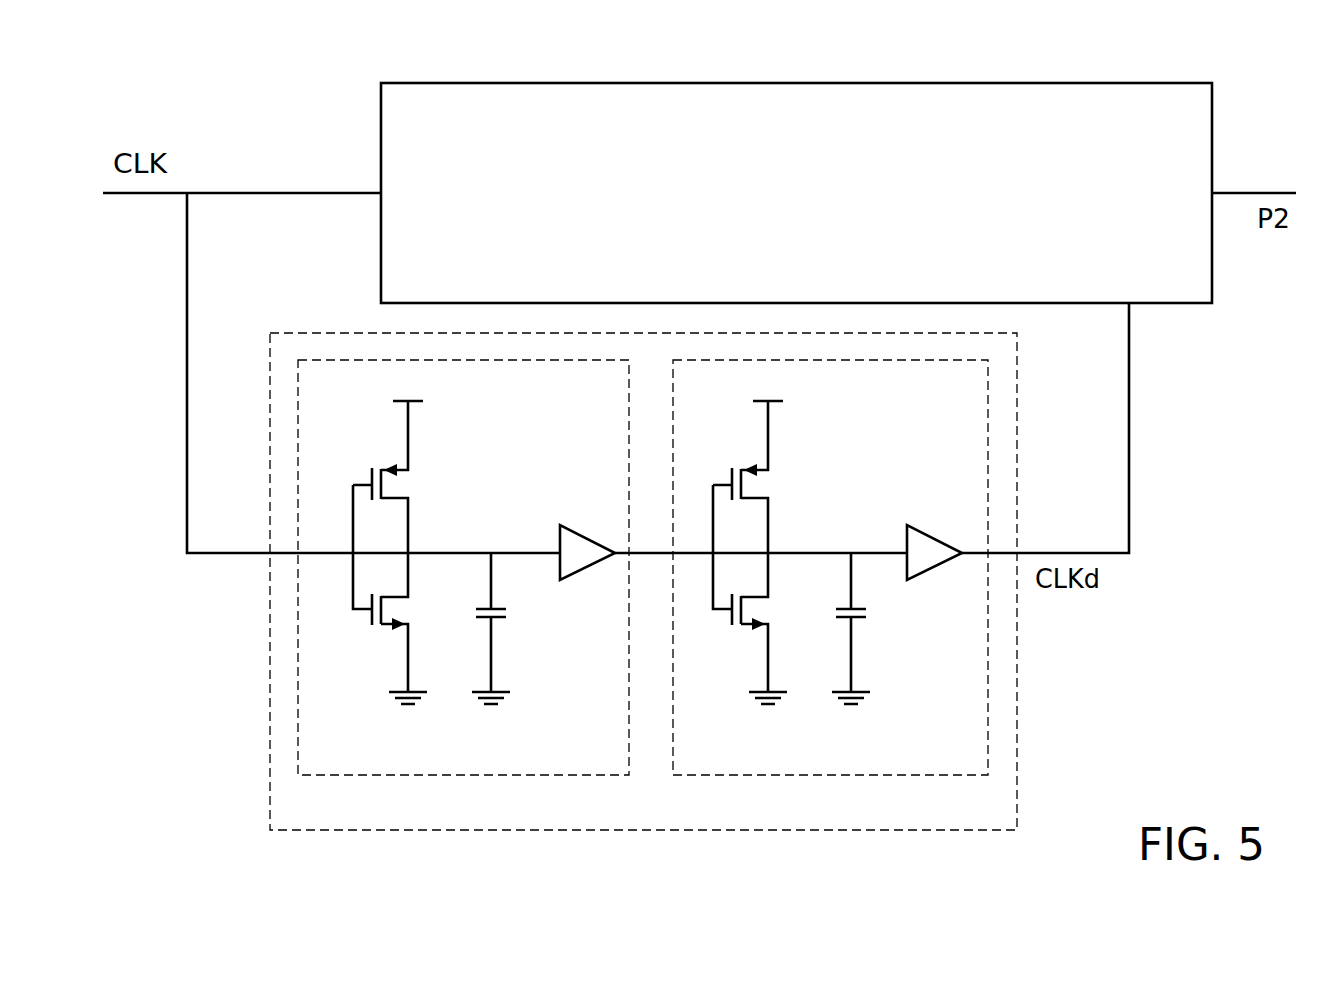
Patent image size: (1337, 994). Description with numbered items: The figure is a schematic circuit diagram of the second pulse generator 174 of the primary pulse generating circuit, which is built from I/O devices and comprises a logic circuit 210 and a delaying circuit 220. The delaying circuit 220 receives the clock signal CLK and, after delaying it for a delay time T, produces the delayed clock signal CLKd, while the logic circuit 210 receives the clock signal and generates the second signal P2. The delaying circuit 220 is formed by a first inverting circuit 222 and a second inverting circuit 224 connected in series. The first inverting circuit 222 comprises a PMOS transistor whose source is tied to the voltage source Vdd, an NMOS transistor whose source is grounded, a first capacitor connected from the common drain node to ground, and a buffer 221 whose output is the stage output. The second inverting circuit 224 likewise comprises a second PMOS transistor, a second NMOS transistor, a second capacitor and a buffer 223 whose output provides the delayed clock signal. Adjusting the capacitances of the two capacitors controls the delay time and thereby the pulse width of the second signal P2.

The logic circuit 210 is at (1186, 289).
The delaying circuit 220 is at (733, 822).
The buffer 221 is at (581, 534).
The first inverting circuit 222 is at (620, 767).
The buffer 223 is at (938, 539).
The second inverting circuit 224 is at (975, 737).
The second pulse generator 174 is at (1216, 516).